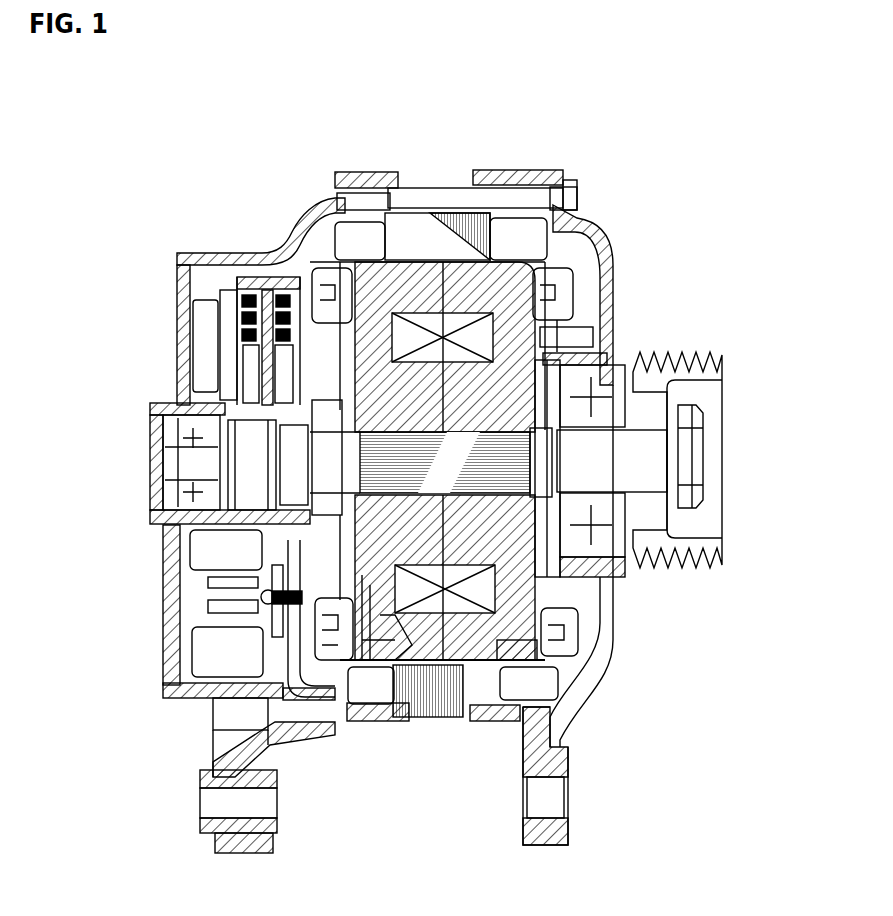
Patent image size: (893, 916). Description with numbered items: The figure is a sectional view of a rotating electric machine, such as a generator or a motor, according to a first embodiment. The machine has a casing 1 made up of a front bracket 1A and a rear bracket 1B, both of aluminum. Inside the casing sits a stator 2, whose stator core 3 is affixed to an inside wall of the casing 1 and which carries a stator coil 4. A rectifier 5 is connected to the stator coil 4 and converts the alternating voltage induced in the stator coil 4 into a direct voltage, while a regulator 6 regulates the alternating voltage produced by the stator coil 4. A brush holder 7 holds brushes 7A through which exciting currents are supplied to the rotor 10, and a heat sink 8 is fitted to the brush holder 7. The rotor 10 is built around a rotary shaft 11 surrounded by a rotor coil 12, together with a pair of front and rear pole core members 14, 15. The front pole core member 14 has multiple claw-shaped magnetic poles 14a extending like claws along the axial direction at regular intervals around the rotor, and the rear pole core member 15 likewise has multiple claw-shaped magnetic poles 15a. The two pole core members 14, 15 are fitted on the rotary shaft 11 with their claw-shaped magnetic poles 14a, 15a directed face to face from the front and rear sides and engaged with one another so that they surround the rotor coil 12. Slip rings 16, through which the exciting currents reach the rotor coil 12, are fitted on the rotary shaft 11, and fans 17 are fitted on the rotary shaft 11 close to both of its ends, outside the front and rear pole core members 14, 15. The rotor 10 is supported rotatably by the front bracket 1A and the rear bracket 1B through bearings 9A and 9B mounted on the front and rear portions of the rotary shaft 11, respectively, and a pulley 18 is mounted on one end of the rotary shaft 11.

The casing 1 is at (440, 128).
The front bracket 1A is at (368, 174).
The rear bracket 1B is at (512, 170).
The stator 2 is at (590, 122).
The stator core 3 is at (525, 242).
The stator coil 4 is at (580, 218).
The rectifier 5 is at (215, 600).
The regulator 6 is at (228, 303).
The brush holder 7 is at (234, 303).
The brushes 7A is at (252, 378).
The heat sink 8 is at (205, 335).
The bearing 9A is at (610, 378).
The bearing 9B is at (185, 435).
The rotor 10 is at (437, 828).
The rotary shaft 11 is at (570, 473).
The rotor coil 12 is at (473, 592).
The front pole core member 14 is at (523, 648).
The claw-shaped magnetic poles 14a is at (490, 640).
The rear pole core member 15 is at (372, 647).
The claw-shaped magnetic poles 15a is at (410, 637).
The slip rings 16 is at (256, 465).
The fans 17 is at (572, 632).
The pulley 18 is at (690, 358).